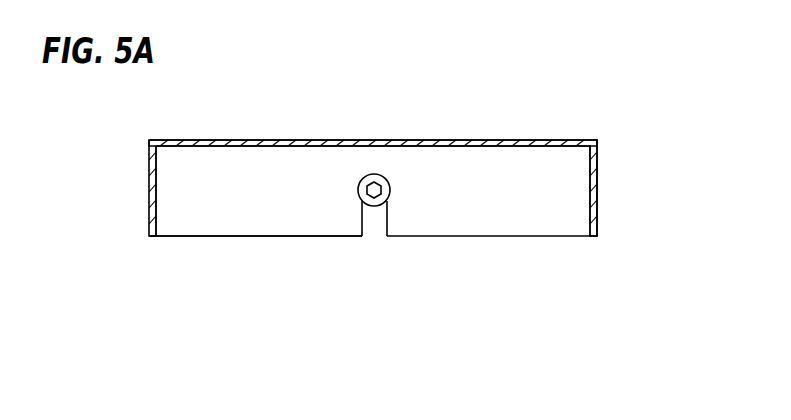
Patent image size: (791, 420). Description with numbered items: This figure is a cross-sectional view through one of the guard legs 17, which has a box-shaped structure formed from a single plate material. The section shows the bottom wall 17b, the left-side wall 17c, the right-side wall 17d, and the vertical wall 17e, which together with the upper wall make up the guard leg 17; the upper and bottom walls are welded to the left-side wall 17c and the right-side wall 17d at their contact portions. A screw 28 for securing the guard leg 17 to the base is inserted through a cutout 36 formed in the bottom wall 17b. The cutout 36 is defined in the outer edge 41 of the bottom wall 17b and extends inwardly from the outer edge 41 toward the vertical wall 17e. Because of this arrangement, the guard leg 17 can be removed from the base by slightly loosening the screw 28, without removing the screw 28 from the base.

The guard leg 17 is at (488, 238).
The bottom wall 17b is at (240, 200).
The left-side wall 17c is at (148, 203).
The right-side wall 17d is at (598, 187).
The vertical wall 17e is at (229, 140).
The screw 28 is at (358, 193).
The cutout 36 is at (382, 236).
The outer edge 41 is at (187, 237).